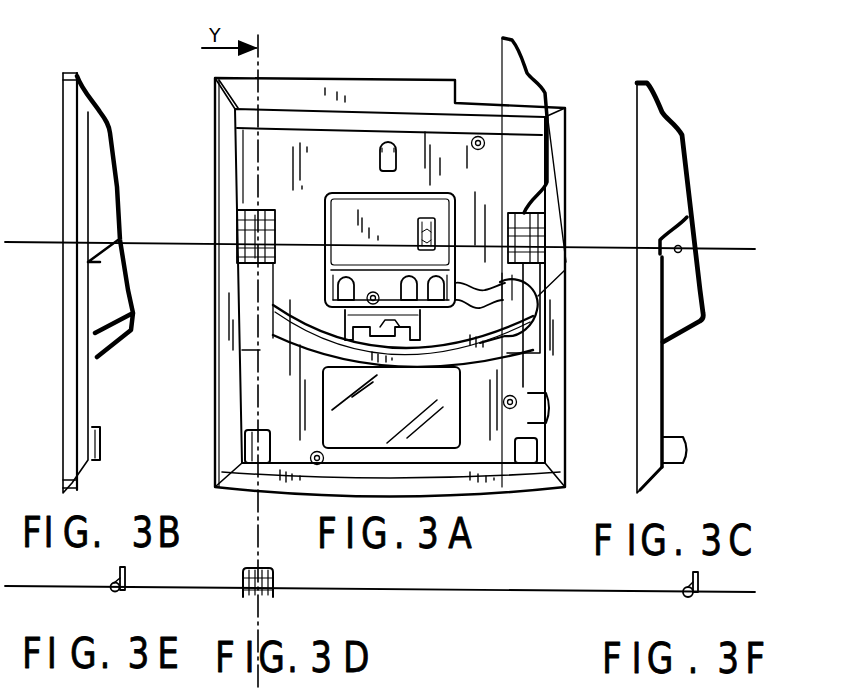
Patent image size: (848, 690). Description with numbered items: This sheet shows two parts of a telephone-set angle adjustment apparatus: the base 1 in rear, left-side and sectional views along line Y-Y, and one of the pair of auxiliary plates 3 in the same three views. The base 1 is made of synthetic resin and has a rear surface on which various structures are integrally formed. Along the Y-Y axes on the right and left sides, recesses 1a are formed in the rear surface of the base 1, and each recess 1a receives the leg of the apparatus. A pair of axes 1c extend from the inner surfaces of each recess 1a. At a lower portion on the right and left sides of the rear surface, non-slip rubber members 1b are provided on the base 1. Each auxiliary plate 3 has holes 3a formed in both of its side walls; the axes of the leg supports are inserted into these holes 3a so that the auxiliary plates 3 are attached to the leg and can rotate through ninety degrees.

In FIG. 3A, the base 1 is at (358, 76).
In FIG. 3B, the base 1 is at (63, 340).
In FIG. 3C, the base 1 is at (704, 294).
In FIG. 3A, the recess 1a is at (242, 265).
In FIG. 3A, the non-slip rubber member 1b is at (245, 445).
In FIG. 3C, the axis 1c is at (680, 249).
In FIG. 3D, the auxiliary plate 3 is at (243, 575).
In FIG. 3E, the auxiliary plate 3 is at (115, 572).
In FIG. 3F, the auxiliary plate 3 is at (700, 578).
In FIG. 3E, the hole 3a is at (113, 591).